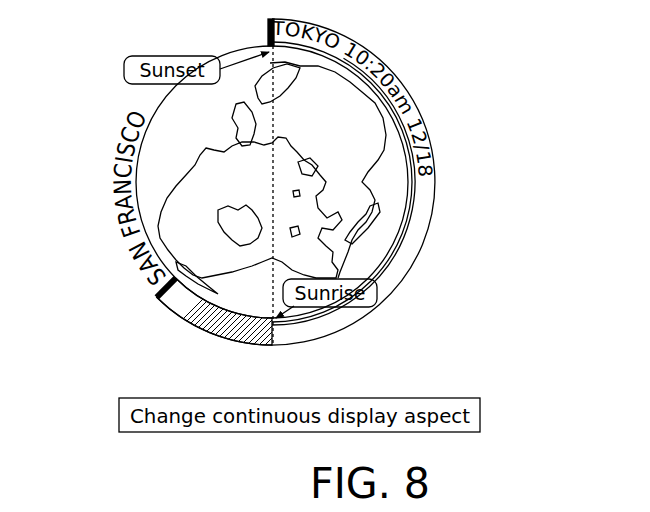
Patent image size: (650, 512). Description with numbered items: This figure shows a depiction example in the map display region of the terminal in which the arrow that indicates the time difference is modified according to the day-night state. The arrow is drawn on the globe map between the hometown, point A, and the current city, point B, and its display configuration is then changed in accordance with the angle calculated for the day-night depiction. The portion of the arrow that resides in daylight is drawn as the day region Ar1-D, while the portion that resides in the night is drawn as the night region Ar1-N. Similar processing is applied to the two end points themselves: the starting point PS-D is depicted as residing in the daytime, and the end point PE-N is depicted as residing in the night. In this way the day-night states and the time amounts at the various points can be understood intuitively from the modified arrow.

The starting point residing in the daytime PS-D is at (266, 40).
The end point residing in the night PE-N is at (155, 298).
The day depiction region of the arrow Ar1-D is at (410, 256).
The night depiction region of the arrow Ar1-N is at (222, 330).
The point A (hometown) A is at (273, 7).
The point B (current city) B is at (137, 316).